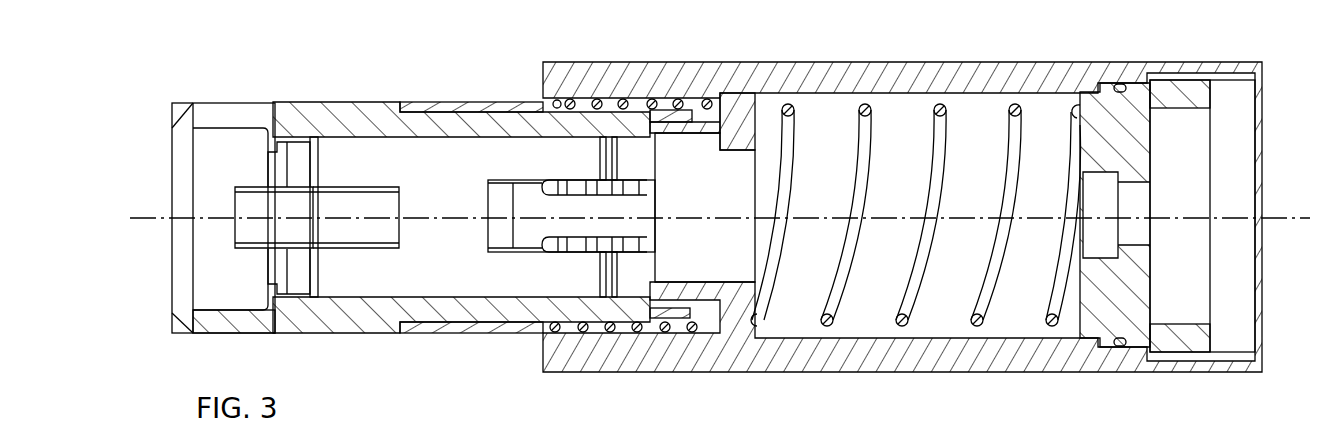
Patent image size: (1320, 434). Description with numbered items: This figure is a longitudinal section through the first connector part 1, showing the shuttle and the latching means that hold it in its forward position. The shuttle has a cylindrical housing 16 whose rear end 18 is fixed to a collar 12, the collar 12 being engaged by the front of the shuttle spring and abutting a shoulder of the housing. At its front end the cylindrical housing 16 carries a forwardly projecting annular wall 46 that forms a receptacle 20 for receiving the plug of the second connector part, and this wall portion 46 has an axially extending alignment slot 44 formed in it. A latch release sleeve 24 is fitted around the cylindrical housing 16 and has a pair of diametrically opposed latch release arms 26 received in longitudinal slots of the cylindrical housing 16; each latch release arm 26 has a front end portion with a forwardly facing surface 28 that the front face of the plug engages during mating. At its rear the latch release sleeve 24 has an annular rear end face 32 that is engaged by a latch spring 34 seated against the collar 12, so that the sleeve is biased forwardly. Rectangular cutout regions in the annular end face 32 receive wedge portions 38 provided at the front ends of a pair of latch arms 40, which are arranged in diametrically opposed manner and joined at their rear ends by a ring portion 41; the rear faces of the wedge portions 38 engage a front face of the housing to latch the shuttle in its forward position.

The first connector part 1 is at (620, 58).
The collar 12 is at (750, 106).
The cylindrical housing 16 is at (368, 118).
The rear end 18 is at (722, 100).
The receptacle 20 is at (213, 292).
The latch release sleeve 24 is at (488, 108).
The latch release arms 26 is at (343, 230).
The forwardly facing surface 28 is at (233, 210).
The annular rear end face 32 is at (568, 98).
The latch spring 34 is at (573, 335).
The wedge portions 38 is at (498, 228).
The latch arms 40 is at (636, 227).
The ring portion 41 is at (676, 99).
The alignment slot 44 is at (224, 107).
The annular wall 46 is at (235, 322).